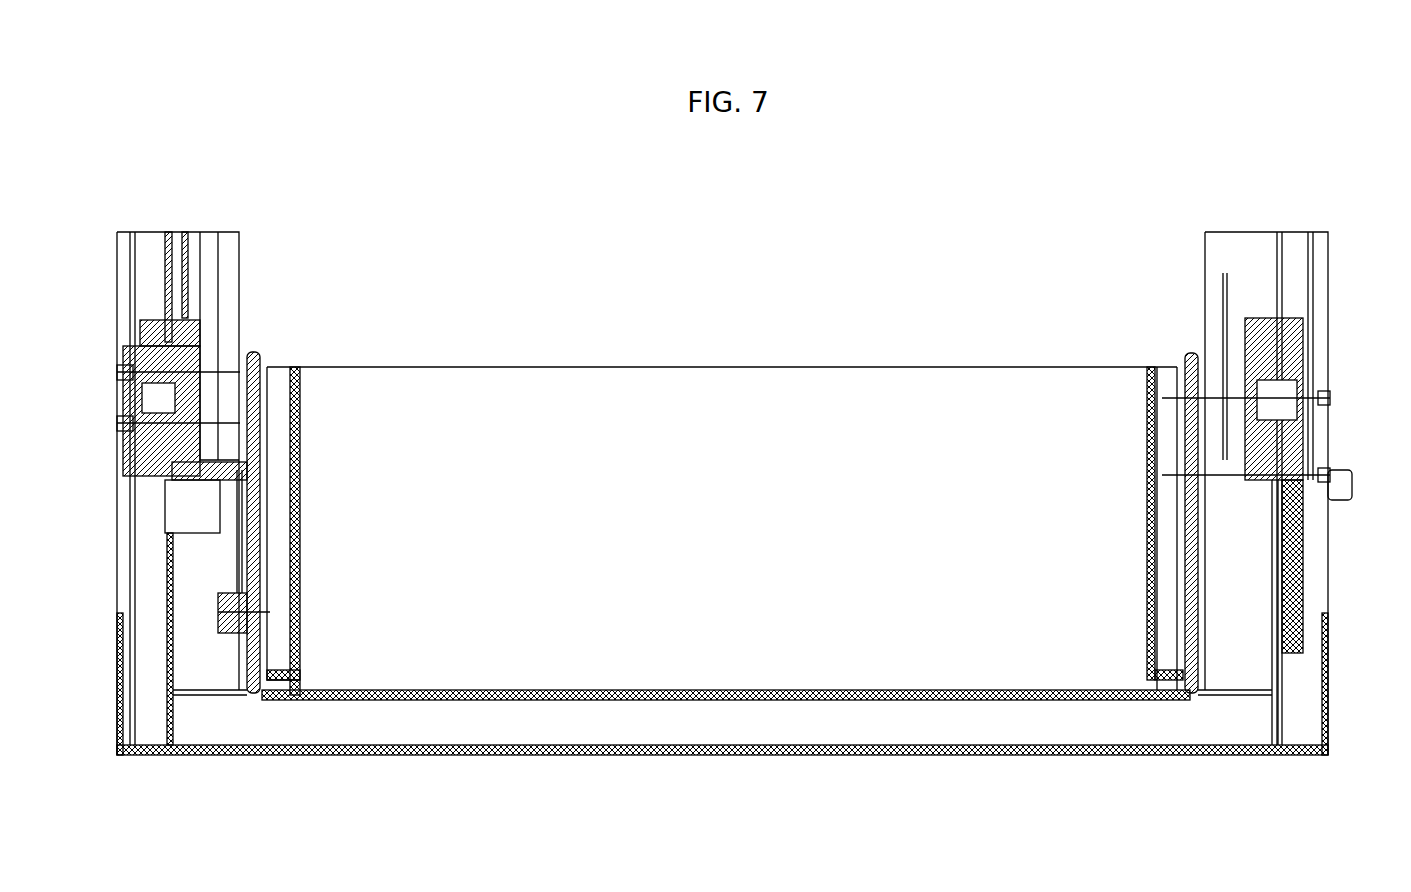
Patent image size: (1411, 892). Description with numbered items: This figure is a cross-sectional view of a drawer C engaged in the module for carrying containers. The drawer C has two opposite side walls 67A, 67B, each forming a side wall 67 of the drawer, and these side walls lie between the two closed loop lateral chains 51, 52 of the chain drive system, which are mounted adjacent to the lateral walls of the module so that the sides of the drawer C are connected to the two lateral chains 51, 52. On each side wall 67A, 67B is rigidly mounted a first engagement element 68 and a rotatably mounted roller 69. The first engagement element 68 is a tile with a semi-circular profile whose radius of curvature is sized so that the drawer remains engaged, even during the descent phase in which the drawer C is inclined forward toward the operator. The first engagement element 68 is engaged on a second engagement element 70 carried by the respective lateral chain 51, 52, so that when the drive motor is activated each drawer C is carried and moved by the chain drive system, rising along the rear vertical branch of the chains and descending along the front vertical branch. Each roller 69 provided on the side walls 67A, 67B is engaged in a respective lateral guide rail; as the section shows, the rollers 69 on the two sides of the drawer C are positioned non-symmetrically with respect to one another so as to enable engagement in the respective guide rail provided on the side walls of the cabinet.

The lateral chain 51 is at (1258, 493).
The lateral chain 52 is at (180, 497).
The side wall 67 is at (262, 352).
The side wall 67A is at (1192, 612).
The side wall 67B is at (250, 538).
The first engagement element 68 is at (235, 462).
The roller 69 is at (238, 634).
The second engagement element 70 is at (245, 472).
The drawer C is at (662, 355).